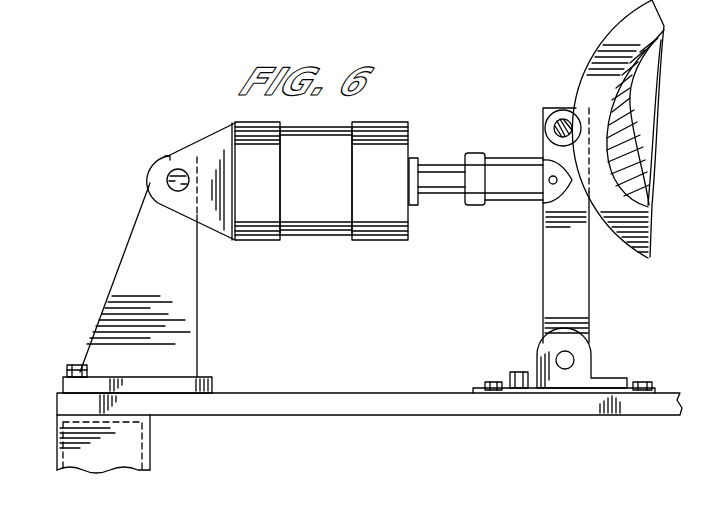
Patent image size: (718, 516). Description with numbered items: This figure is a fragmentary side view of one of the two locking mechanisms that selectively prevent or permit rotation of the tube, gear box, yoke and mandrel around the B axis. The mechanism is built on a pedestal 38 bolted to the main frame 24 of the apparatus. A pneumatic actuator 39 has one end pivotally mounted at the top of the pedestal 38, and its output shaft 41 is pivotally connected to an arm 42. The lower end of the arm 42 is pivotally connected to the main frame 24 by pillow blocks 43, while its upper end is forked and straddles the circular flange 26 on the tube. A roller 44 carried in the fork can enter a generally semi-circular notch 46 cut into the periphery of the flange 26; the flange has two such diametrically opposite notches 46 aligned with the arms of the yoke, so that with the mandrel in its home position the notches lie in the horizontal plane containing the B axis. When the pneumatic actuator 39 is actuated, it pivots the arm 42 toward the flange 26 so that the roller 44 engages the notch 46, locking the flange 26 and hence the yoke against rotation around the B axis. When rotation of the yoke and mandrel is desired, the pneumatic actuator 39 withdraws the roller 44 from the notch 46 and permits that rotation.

The main frame 24 is at (308, 393).
The circular flange 26 is at (620, 22).
The pedestal 38 is at (186, 321).
The pneumatic actuator 39 is at (313, 232).
The output shaft 41 is at (443, 188).
The arm 42 is at (578, 275).
The pillow blocks 43 is at (537, 350).
The roller 44 is at (546, 130).
The semi-circular notch 46 is at (590, 111).